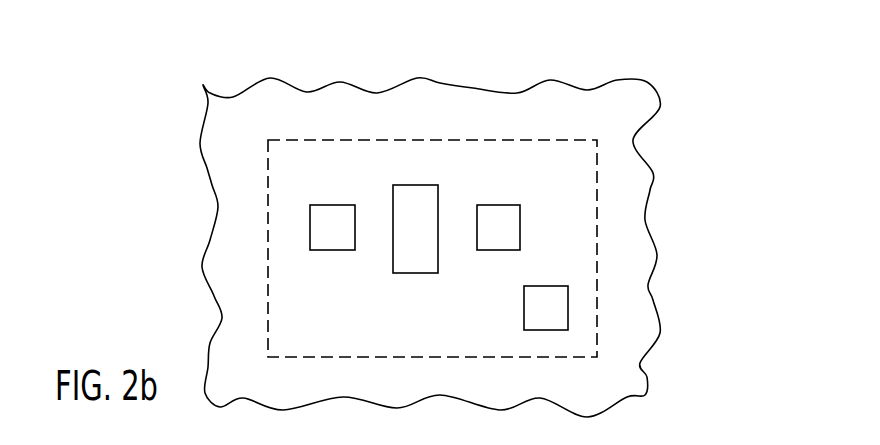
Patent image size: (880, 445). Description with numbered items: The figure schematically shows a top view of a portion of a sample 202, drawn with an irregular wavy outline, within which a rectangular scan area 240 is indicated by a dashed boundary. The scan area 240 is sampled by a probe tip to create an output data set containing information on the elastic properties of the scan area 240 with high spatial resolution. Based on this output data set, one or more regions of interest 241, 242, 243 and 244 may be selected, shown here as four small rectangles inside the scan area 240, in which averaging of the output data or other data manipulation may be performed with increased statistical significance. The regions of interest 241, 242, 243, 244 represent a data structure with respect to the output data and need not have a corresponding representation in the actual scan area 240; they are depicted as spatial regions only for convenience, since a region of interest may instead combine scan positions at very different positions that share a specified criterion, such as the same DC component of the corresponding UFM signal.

The sample 202 is at (693, 70).
The scan area 240 is at (566, 140).
The region of interest 241 is at (316, 250).
The region of interest 242 is at (398, 273).
The region of interest 243 is at (480, 250).
The region of interest 244 is at (556, 286).